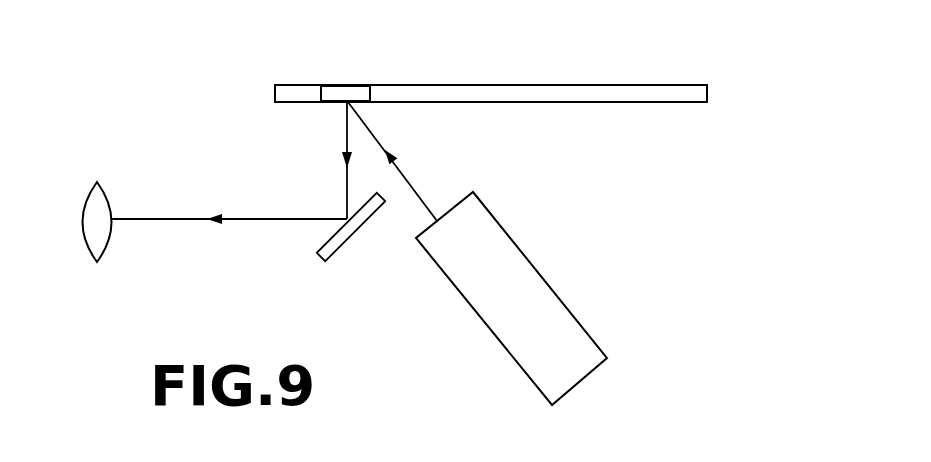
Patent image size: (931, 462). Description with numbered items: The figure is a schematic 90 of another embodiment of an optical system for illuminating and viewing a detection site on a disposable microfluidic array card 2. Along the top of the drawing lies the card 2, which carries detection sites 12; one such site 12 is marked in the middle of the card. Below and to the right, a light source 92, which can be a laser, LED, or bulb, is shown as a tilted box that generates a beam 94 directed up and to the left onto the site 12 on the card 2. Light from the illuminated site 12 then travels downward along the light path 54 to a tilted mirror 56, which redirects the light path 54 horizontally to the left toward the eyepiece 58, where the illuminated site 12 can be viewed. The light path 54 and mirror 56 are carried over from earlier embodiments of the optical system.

The schematic 90 is at (312, 37).
The disposable microfluidic array card 2 is at (592, 85).
The site 12 is at (347, 84).
The eyepiece 58 is at (108, 200).
The light path 54 is at (348, 186).
The mirror 56 is at (355, 235).
The beam 94 is at (420, 183).
The light source 92 is at (540, 270).